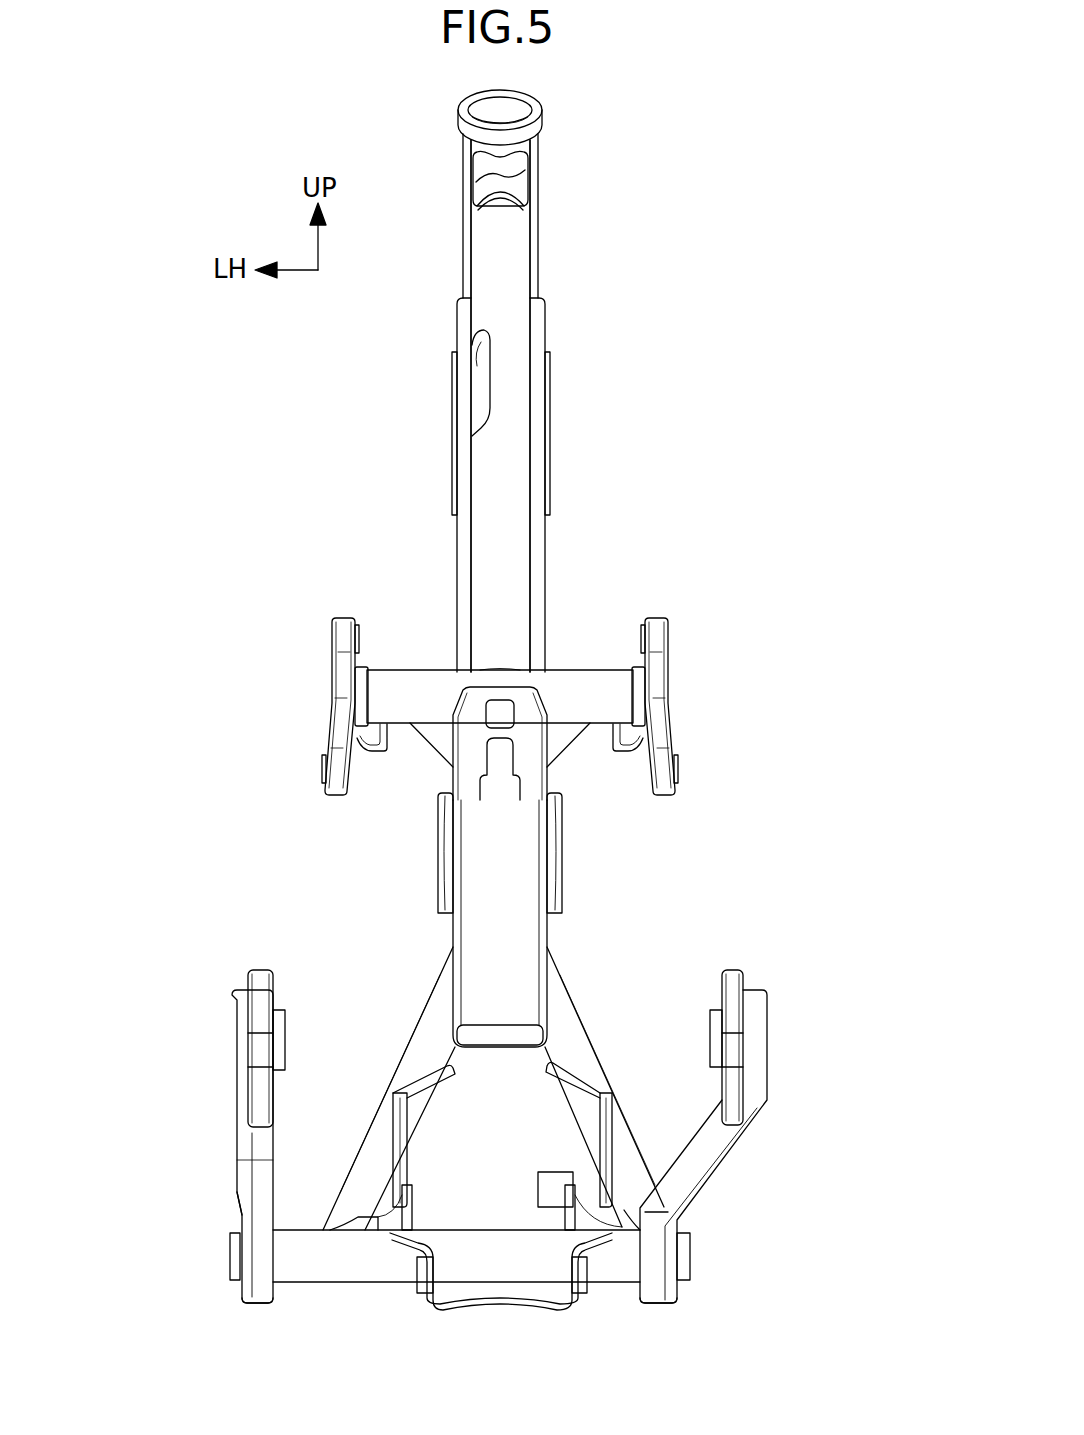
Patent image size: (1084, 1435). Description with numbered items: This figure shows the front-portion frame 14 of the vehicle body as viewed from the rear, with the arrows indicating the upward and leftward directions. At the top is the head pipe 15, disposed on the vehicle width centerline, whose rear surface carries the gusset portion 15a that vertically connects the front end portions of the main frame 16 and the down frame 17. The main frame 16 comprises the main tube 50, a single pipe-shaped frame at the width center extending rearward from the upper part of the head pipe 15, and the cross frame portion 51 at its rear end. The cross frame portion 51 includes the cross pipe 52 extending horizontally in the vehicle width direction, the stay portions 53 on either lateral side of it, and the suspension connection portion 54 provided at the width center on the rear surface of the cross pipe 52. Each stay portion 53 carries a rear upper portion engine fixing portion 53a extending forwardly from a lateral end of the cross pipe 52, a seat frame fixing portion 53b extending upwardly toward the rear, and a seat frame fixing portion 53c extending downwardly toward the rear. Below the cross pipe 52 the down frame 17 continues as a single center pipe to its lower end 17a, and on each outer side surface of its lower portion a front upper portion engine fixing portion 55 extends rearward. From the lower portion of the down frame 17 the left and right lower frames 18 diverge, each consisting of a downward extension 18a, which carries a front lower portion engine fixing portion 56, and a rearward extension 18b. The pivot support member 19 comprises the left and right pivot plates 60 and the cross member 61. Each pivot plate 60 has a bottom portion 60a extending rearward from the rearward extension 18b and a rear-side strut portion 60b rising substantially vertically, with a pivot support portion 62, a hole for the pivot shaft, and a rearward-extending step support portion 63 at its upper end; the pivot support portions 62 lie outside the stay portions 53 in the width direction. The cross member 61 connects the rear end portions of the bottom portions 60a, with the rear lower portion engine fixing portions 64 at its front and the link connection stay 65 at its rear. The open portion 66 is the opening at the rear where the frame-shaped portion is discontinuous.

The front-portion frame 14 is at (386, 99).
The head pipe 15 is at (538, 137).
The gusset portion 15a is at (520, 168).
The main frame 16 is at (533, 551).
The down frame 17 is at (457, 545).
The lower end 17a is at (505, 1047).
The lower frame 18 is at (410, 1033).
The downward extension 18a is at (418, 1048).
The rearward extension 18b is at (298, 1285).
The pivot support member 19 is at (240, 1160).
The main tube 50 is at (517, 328).
The cross frame portion 51 is at (586, 670).
The cross pipe 52 is at (412, 680).
The stay portion 53 is at (332, 680).
The rear upper portion engine fixing portion 53a is at (380, 745).
The seat frame fixing portion 53b is at (332, 630).
The seat frame fixing portion 53c is at (323, 770).
The suspension connection portion 54 is at (525, 745).
The front upper portion engine fixing portion 55 is at (438, 855).
The front lower portion engine fixing portion 56 is at (393, 1110).
The pivot plate 60 is at (243, 1180).
The bottom portion 60a is at (256, 1305).
The rear-side strut portion 60b is at (245, 1137).
The cross member 61 is at (390, 1285).
The pivot support portion 62 is at (285, 1035).
The step support portion 63 is at (248, 985).
The rear lower portion engine fixing portion 64 is at (413, 1205).
The link connection stay 65 is at (537, 1300).
The open portion 66 is at (285, 920).